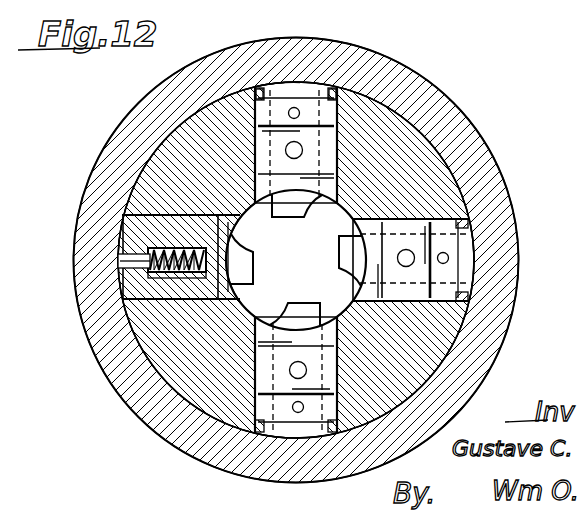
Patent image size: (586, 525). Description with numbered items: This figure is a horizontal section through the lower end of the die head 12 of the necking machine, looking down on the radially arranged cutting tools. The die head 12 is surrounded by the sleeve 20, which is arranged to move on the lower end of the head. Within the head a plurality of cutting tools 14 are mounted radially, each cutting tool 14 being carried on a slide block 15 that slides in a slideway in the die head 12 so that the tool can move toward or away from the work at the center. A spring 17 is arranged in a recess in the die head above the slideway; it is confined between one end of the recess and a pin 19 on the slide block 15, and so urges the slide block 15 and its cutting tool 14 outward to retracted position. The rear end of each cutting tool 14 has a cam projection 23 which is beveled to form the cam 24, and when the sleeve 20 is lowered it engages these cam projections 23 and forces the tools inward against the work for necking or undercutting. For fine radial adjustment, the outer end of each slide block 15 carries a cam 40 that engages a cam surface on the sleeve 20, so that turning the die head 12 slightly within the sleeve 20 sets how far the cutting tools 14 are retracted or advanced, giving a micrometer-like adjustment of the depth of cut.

The die head 12 is at (430, 189).
The cutting tool 14 is at (343, 253).
The slide block 15 is at (330, 110).
The spring 17 is at (125, 300).
The pin 19 is at (120, 258).
The sleeve 20 is at (478, 132).
The cam projection 23 is at (350, 98).
The cam 24 is at (297, 90).
The cam 40 is at (283, 80).